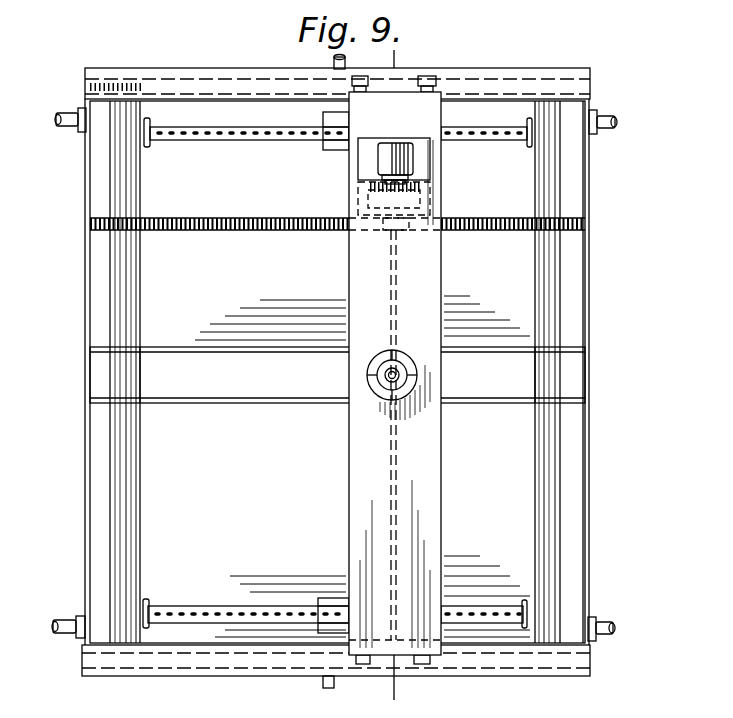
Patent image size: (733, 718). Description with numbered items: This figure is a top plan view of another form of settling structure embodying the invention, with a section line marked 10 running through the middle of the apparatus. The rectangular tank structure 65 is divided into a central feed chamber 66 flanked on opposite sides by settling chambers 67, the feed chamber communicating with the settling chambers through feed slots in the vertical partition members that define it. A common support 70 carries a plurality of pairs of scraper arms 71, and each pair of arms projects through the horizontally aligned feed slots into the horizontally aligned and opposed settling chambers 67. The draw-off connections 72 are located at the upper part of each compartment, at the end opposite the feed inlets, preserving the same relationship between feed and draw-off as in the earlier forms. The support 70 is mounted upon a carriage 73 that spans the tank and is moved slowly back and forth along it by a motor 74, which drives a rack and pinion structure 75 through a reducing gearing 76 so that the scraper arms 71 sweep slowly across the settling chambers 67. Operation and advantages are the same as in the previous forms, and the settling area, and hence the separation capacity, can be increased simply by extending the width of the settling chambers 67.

The section line 10 is at (392, 694).
The rectangular tank structure 65 is at (592, 191).
The central feed chamber 66 is at (508, 378).
The settling chambers 67 is at (157, 273).
The common support 70 is at (396, 368).
The scraper arms 71 is at (397, 270).
The draw-off connections 72 is at (240, 138).
The carriage 73 is at (430, 470).
The motor 74 is at (388, 162).
The rack and pinion structure 75 is at (385, 226).
The reducing gearing 76 is at (420, 198).